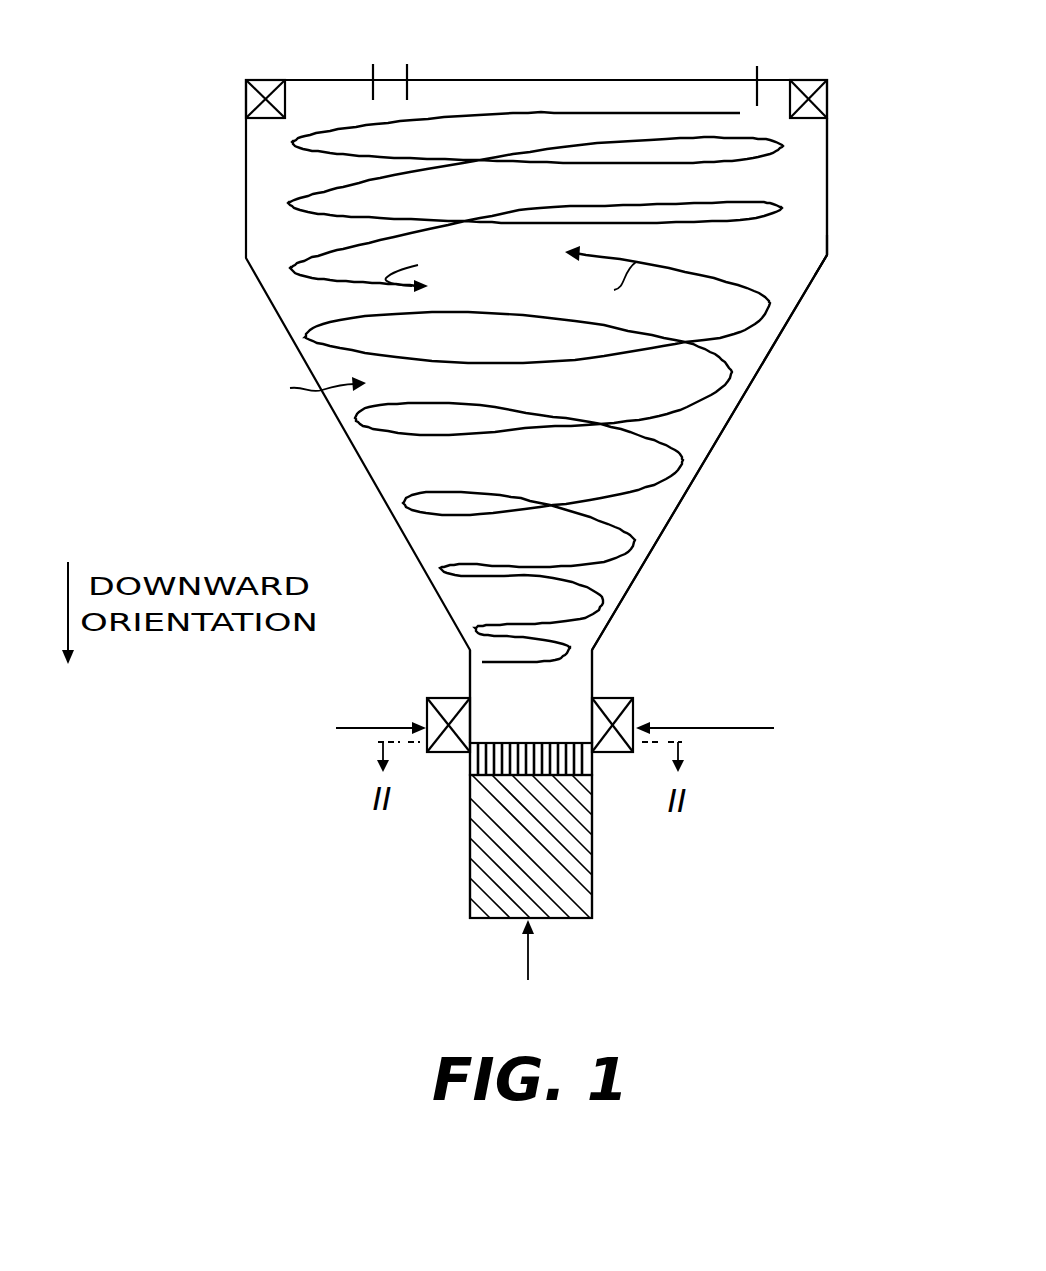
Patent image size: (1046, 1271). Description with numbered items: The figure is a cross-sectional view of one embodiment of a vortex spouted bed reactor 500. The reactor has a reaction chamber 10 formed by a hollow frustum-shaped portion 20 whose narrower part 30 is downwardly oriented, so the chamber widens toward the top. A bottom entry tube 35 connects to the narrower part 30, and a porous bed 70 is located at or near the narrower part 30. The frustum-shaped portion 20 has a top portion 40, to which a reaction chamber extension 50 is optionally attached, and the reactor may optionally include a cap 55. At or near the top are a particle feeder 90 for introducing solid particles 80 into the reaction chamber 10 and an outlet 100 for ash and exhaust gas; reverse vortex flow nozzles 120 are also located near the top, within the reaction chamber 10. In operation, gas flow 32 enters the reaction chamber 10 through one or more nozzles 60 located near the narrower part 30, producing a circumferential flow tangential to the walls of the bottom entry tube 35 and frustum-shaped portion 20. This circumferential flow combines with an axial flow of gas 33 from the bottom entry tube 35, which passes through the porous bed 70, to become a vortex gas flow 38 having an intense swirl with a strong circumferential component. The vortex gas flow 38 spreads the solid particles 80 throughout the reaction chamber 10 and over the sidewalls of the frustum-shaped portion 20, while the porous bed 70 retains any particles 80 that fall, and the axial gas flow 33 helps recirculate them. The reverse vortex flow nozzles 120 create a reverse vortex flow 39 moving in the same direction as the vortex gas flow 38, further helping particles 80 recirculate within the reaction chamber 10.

The reaction chamber 10 is at (307, 228).
The frustum-shaped portion 20 is at (770, 345).
The narrower part 30 is at (594, 651).
The gas flow 32 is at (533, 728).
The axial flow of gas 33 is at (526, 968).
The bottom entry tube 35 is at (460, 887).
The vortex gas flow 38 is at (600, 276).
The reverse vortex flow 39 is at (422, 267).
The top portion 40 is at (828, 258).
The reaction chamber extension 50 is at (828, 172).
The cap 55 is at (313, 78).
The nozzles 60 is at (427, 702).
The porous bed 70 is at (592, 756).
The solid particles 80 is at (308, 388).
The particle feeder 90 is at (407, 66).
The outlet 100 is at (791, 80).
The reverse vortex flow nozzles 120 is at (246, 96).
The vortex spouted bed reactor 500 is at (694, 494).